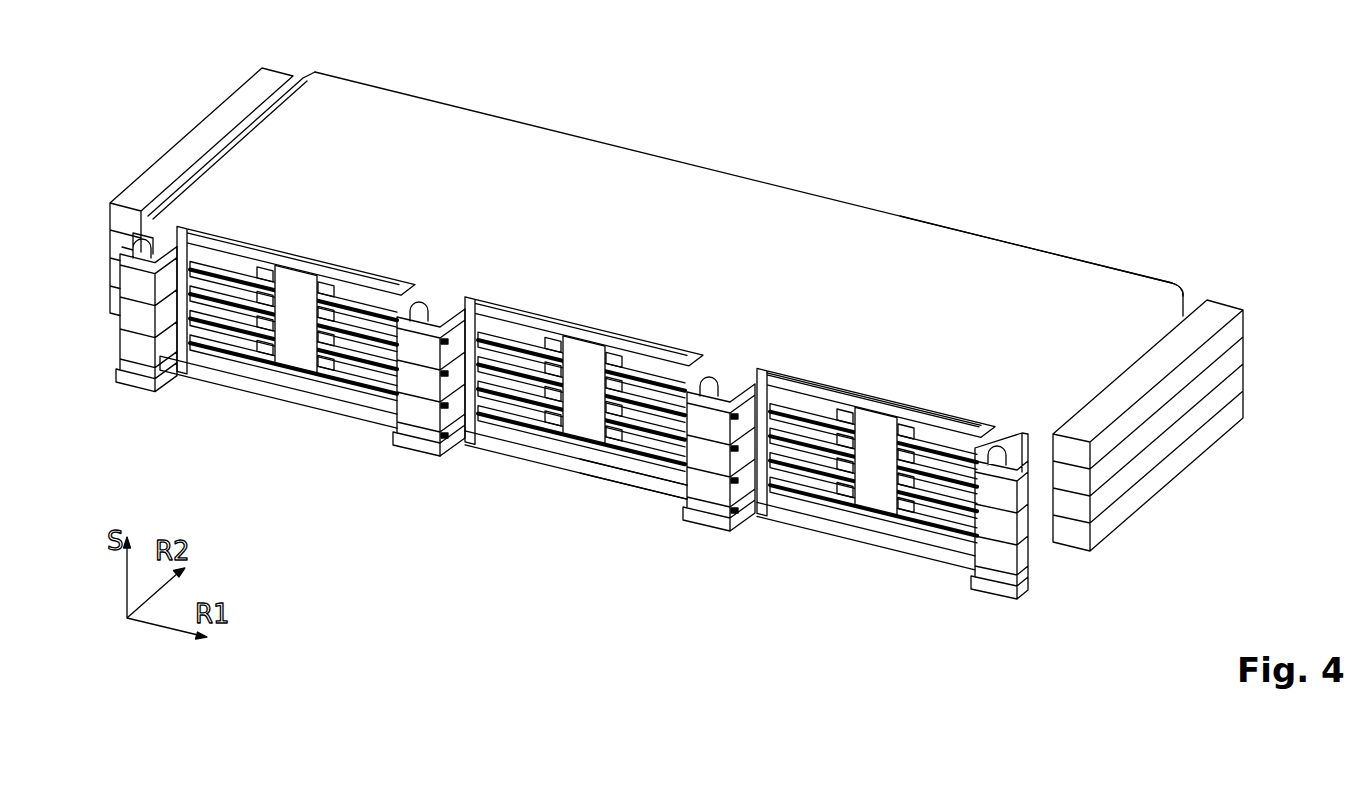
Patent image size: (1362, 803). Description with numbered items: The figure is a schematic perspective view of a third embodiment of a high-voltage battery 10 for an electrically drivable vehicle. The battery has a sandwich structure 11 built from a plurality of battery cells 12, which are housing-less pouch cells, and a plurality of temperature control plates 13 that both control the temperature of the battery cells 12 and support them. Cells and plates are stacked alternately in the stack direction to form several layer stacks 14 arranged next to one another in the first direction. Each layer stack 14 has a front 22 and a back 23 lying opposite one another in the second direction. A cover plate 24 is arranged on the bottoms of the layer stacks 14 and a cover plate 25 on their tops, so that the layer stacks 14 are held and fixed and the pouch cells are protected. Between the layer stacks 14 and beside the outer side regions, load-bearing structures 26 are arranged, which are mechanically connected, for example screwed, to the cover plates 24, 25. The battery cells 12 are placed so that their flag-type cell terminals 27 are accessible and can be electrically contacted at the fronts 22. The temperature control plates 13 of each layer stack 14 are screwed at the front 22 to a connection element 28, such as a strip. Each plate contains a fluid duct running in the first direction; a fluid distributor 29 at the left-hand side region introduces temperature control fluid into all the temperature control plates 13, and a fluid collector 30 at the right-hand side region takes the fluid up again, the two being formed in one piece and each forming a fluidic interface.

The high-voltage battery 10 is at (1010, 117).
The sandwich structure 11 is at (1051, 234).
The battery cells 12 is at (359, 287).
The temperature control plates 13 is at (950, 433).
The layer stack 14 is at (243, 367).
The front 22 is at (460, 450).
The back 23 is at (567, 114).
The cover plate 24 is at (640, 467).
The cover plate 25 is at (737, 190).
The load-bearing structures 26 is at (418, 415).
The cell terminals 27 is at (229, 250).
The connection element 28 is at (580, 425).
The fluid distributor 29 is at (203, 137).
The fluid collector 30 is at (1218, 313).